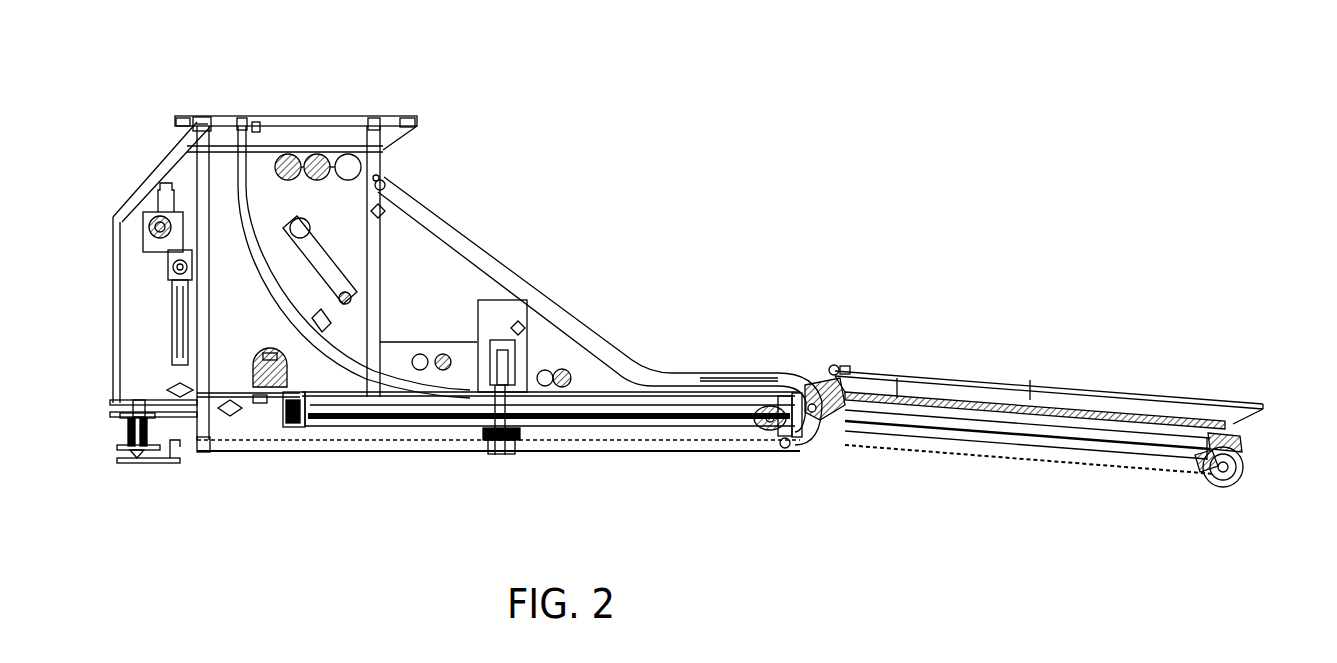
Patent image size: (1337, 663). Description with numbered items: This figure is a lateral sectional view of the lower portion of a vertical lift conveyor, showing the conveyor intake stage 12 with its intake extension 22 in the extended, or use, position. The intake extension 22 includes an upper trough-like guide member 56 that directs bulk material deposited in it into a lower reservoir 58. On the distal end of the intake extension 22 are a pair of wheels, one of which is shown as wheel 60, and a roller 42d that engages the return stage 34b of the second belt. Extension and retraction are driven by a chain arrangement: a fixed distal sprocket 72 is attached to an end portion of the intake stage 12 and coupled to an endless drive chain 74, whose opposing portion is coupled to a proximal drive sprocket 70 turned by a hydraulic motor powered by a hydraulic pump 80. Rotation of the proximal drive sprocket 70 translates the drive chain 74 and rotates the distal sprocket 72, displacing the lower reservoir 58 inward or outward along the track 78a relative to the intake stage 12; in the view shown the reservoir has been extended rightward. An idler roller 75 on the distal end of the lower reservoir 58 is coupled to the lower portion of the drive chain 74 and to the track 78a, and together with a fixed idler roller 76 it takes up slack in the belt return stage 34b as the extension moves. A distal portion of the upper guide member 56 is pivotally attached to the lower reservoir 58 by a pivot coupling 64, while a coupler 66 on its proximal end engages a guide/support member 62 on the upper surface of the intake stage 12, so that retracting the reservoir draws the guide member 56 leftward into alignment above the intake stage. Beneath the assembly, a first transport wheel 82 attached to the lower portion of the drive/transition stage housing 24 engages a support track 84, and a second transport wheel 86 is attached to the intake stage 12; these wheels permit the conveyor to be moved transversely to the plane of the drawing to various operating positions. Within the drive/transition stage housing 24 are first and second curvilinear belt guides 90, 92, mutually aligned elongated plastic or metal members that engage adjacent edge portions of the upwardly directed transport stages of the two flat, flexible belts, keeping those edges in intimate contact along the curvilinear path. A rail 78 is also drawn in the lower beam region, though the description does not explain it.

The conveyor intake stage 12 is at (878, 294).
The intake extension 22 is at (1076, 362).
The drive/transition stage housing 24 is at (340, 284).
The return stage of the second belt 34b is at (1065, 455).
The roller 42d is at (1205, 475).
The upper trough-like guide member 56 is at (1130, 408).
The lower reservoir 58 is at (942, 452).
The wheel 60 is at (1235, 482).
The guide/support member 62 is at (527, 300).
The pivot coupling 64 is at (1235, 440).
The coupler 66 is at (832, 368).
The proximal drive sprocket 70 is at (295, 425).
The fixed distal sprocket 72 is at (785, 400).
The drive chain 74 is at (377, 423).
The idler roller 75 is at (727, 437).
The fixed idler roller 76 is at (793, 447).
The bottom rail 78 is at (670, 449).
The track 78a is at (405, 432).
The hydraulic pump 80 is at (272, 392).
The first transport wheel 82 is at (122, 445).
The support track 84 is at (140, 463).
The second transport wheel 86 is at (505, 449).
The first curvilinear belt guide 90 is at (268, 158).
The second curvilinear belt guide 92 is at (203, 122).